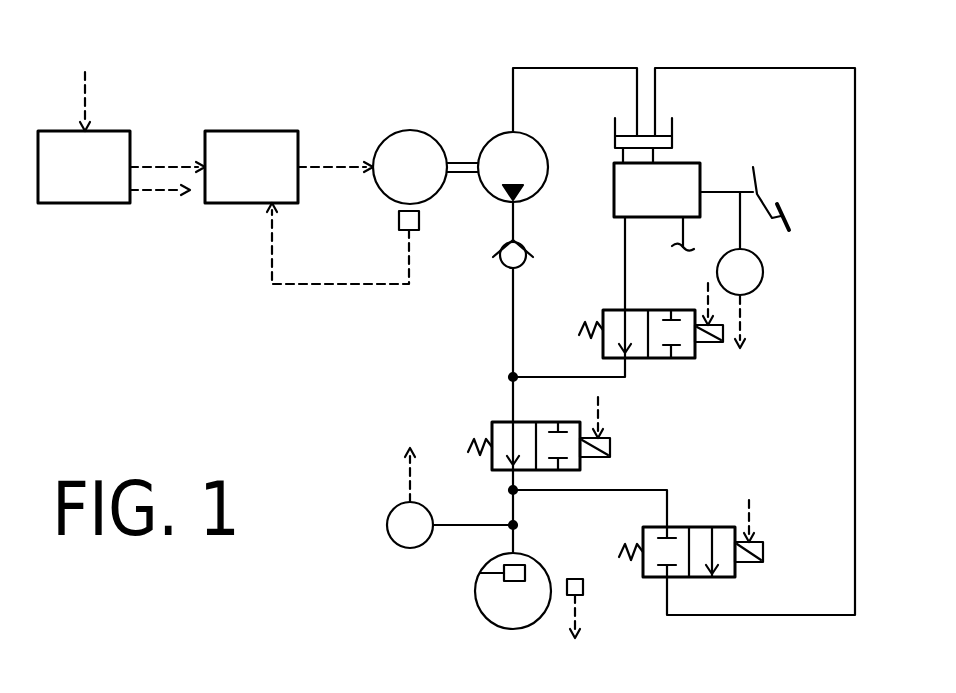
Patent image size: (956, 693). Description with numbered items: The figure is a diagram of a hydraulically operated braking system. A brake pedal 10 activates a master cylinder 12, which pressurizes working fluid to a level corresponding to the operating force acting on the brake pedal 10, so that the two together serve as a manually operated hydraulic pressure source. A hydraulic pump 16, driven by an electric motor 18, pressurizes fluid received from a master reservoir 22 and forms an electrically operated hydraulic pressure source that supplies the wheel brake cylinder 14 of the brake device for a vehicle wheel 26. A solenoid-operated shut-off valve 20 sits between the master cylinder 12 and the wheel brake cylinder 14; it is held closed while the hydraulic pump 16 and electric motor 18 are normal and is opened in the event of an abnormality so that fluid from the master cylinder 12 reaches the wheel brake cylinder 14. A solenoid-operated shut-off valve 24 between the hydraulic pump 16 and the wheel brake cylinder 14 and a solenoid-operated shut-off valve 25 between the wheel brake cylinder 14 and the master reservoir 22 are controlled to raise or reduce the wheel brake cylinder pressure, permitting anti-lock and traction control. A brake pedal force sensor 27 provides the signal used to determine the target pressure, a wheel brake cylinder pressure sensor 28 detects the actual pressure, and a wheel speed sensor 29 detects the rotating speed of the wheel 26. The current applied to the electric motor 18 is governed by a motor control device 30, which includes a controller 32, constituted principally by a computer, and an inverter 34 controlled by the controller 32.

The brake pedal 10 is at (755, 178).
The master cylinder 12 is at (687, 178).
The wheel brake cylinder 14 is at (480, 573).
The hydraulic pump 16 is at (538, 160).
The electric motor 18 is at (432, 150).
The solenoid-operated shut-off valve 20 is at (613, 318).
The master reservoir 22 is at (672, 128).
The solenoid-operated shut-off valve 24 is at (500, 422).
The solenoid-operated shut-off valve 25 is at (643, 537).
The wheel 26 is at (493, 608).
The brake pedal force sensor 27 is at (748, 289).
The wheel brake cylinder pressure sensor 28 is at (410, 542).
The wheel speed sensor 29 is at (583, 587).
The motor control device 30 is at (164, 98).
The controller 32 is at (65, 187).
The inverter 34 is at (233, 187).